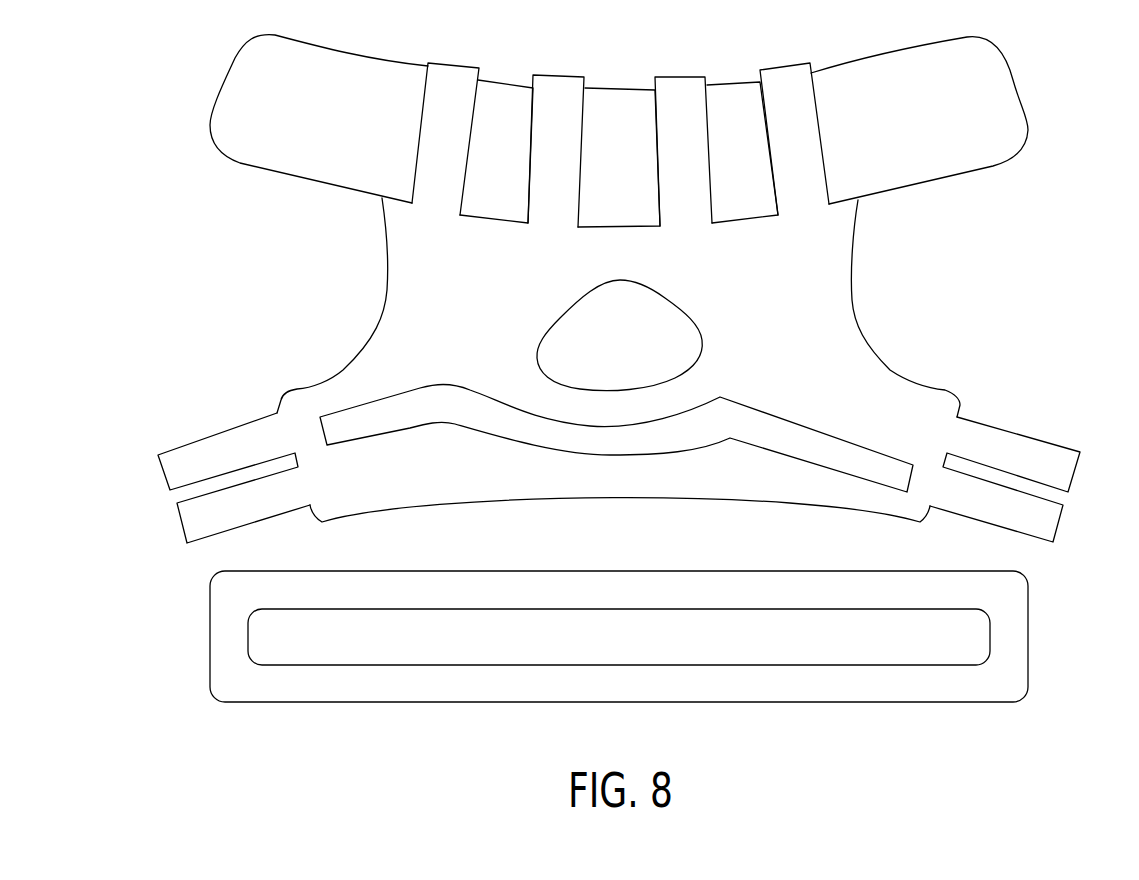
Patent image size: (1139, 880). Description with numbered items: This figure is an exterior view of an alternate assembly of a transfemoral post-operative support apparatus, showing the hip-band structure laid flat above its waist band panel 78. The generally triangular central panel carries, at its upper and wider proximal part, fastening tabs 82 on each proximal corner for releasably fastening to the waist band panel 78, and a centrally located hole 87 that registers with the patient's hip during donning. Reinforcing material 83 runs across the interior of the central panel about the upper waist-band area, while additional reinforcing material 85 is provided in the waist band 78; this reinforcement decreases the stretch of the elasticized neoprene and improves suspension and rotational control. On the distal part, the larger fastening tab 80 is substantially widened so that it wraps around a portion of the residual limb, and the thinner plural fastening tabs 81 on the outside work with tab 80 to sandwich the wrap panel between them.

The waist band panel 78 is at (333, 687).
The fastening tab 80 is at (330, 173).
The fastening tabs 81 is at (448, 77).
The fastening tabs 82 is at (180, 462).
The reinforcing material 83 is at (418, 405).
The reinforcing material 85 is at (417, 623).
The hole 87 is at (647, 298).